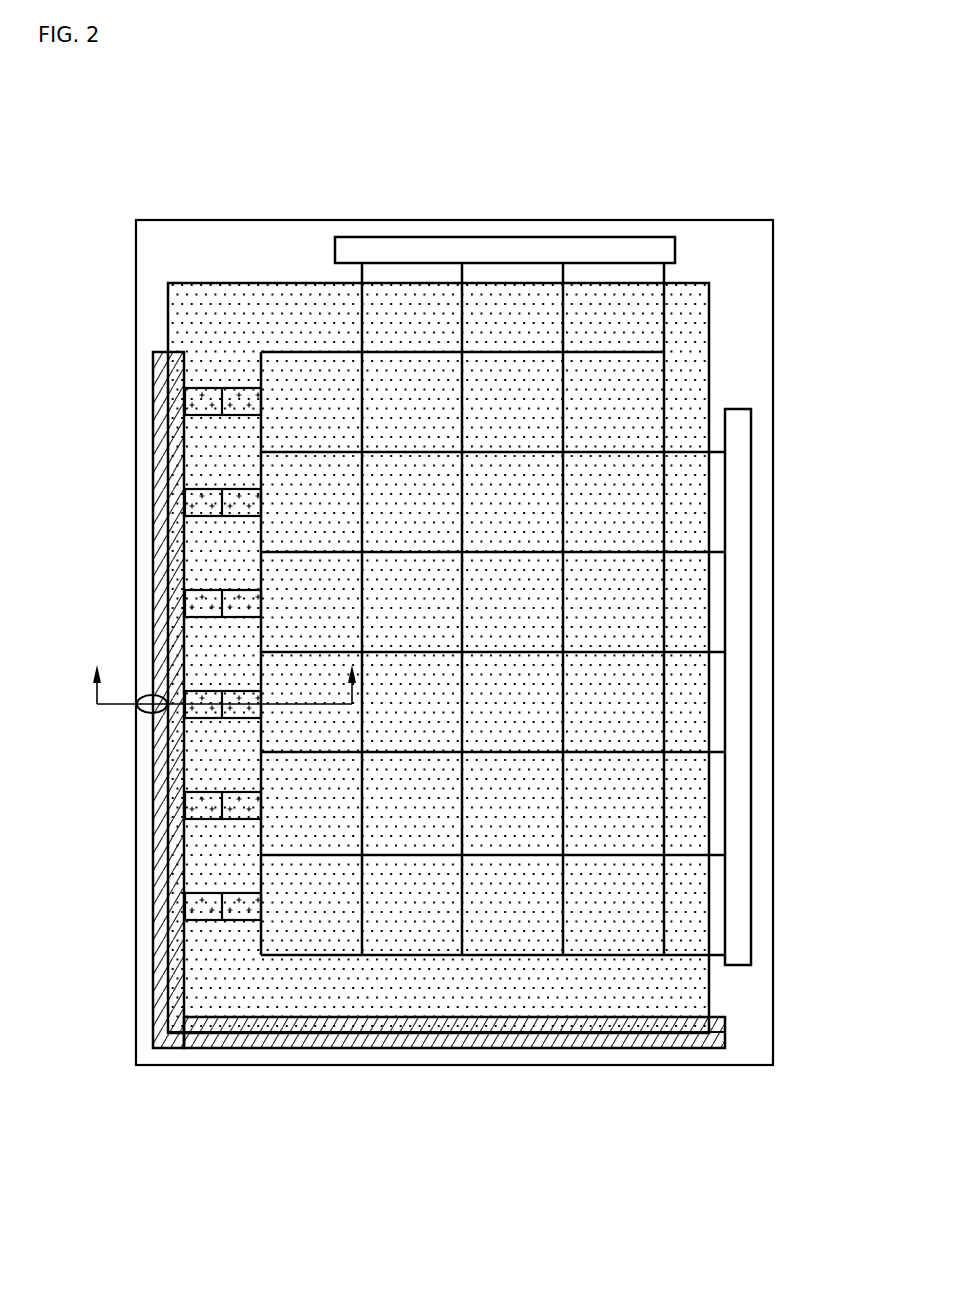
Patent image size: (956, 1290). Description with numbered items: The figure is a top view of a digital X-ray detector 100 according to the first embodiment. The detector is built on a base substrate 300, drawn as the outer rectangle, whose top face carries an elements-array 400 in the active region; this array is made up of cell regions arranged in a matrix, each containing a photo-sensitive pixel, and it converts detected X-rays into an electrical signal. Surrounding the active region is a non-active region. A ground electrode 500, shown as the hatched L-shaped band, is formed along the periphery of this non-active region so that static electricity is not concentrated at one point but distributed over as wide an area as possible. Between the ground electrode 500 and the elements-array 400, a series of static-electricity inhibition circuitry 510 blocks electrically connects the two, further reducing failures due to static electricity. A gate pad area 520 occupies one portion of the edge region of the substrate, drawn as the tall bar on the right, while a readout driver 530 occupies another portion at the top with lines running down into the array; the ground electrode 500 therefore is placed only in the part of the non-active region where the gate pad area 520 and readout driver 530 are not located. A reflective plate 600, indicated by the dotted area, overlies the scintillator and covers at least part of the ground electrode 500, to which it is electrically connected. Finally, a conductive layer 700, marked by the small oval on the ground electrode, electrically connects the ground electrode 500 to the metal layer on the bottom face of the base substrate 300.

The digital X-ray detector 100 is at (697, 108).
The base substrate 300 is at (159, 1080).
The elements-array 400 is at (285, 970).
The ground electrode 500 is at (160, 978).
The static-electricity inhibition circuitry 510 is at (200, 902).
The gate pad area 520 is at (740, 465).
The readout driver 530 is at (349, 247).
The reflective plate 600 is at (183, 270).
The conductive layer 700 is at (137, 713).